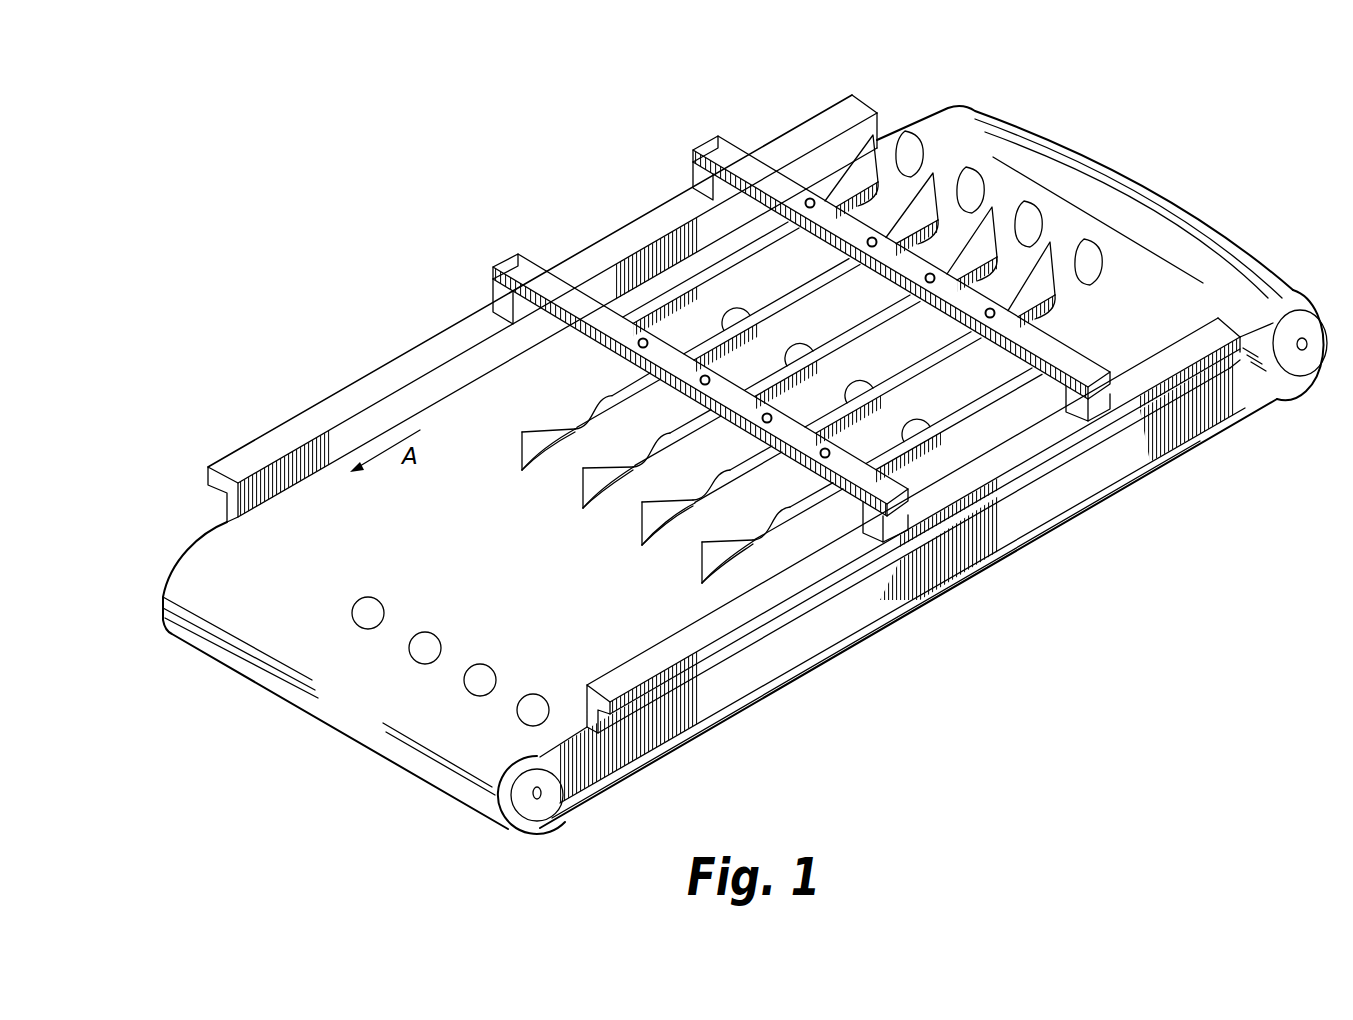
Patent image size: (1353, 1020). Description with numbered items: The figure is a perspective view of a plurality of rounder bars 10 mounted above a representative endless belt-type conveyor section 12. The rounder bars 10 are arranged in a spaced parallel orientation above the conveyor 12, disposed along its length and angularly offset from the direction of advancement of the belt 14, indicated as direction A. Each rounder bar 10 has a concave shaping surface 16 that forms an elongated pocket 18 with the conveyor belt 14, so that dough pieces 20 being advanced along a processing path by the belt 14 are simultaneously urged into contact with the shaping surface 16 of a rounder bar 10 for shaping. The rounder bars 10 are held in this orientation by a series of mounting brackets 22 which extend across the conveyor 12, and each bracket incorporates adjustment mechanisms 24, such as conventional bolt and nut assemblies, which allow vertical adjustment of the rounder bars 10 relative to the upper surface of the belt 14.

The rounder bar 10 is at (500, 479).
The conveyor section 12 is at (388, 312).
The belt 14 is at (250, 603).
The concave shaping surface 16 is at (550, 458).
The elongated pocket 18 is at (947, 408).
The dough pieces 20 is at (417, 652).
The mounting brackets 22 is at (530, 277).
The adjustment mechanisms 24 is at (874, 237).